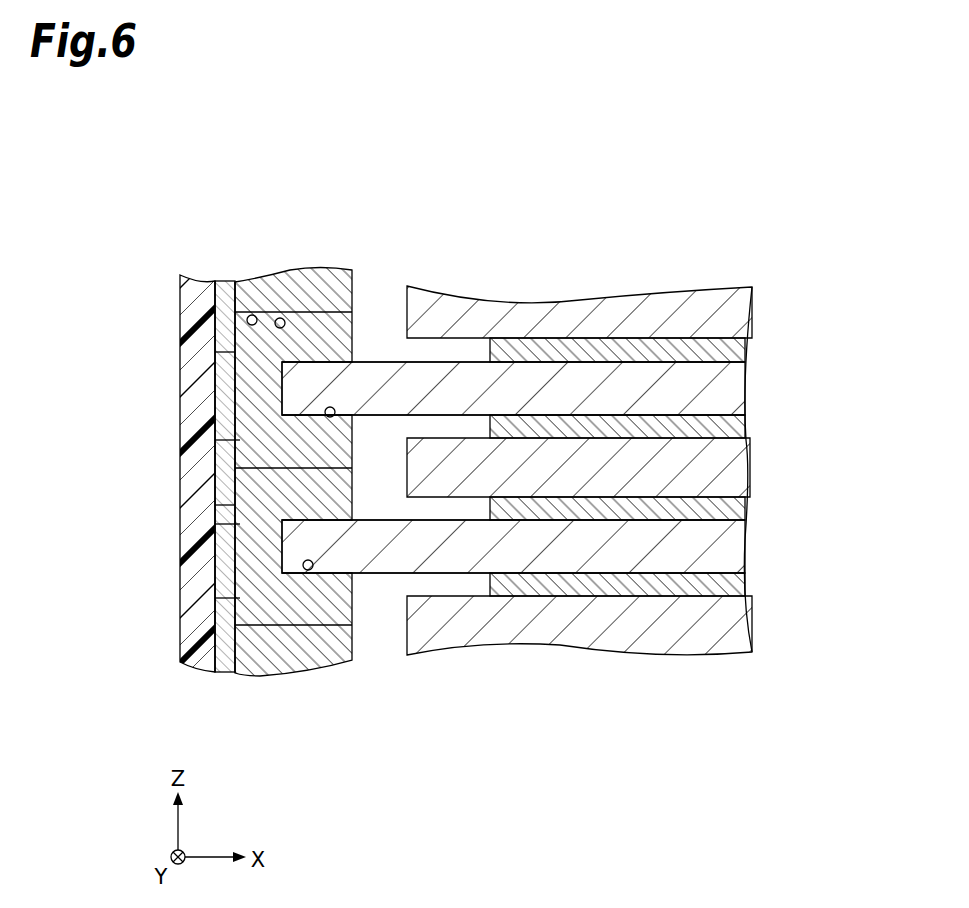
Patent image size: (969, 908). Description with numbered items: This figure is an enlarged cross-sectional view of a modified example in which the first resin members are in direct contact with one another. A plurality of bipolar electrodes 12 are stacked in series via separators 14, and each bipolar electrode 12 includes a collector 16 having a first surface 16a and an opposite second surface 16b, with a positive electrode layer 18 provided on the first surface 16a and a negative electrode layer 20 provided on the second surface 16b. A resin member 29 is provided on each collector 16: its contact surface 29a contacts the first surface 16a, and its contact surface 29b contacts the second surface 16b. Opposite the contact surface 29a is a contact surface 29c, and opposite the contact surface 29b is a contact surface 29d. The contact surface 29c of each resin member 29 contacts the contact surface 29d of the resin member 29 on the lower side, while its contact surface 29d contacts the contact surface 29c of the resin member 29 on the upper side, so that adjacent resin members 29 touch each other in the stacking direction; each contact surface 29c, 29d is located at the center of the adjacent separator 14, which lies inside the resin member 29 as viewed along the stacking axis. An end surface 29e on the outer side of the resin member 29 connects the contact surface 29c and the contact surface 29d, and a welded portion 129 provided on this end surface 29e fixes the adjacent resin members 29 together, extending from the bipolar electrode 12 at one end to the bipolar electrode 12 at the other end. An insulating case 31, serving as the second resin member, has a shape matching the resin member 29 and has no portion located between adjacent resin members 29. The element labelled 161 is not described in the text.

The bipolar electrode 12 is at (576, 470).
The separator 14 is at (738, 305).
The collector 16 is at (735, 396).
The first surface 16a is at (375, 416).
The second surface 16b is at (375, 361).
The positive electrode layer 18 is at (730, 352).
The negative electrode layer 20 is at (732, 430).
The resin member 29 is at (235, 283).
The contact surface 29a is at (325, 412).
The contact surface 29b is at (281, 318).
The contact surface 29c is at (254, 316).
The contact surface 29d is at (205, 324).
The end surface 29e is at (236, 353).
The insulating case 31 is at (184, 296).
The welded portion 129 is at (225, 284).
The holding block 161 is at (305, 372).